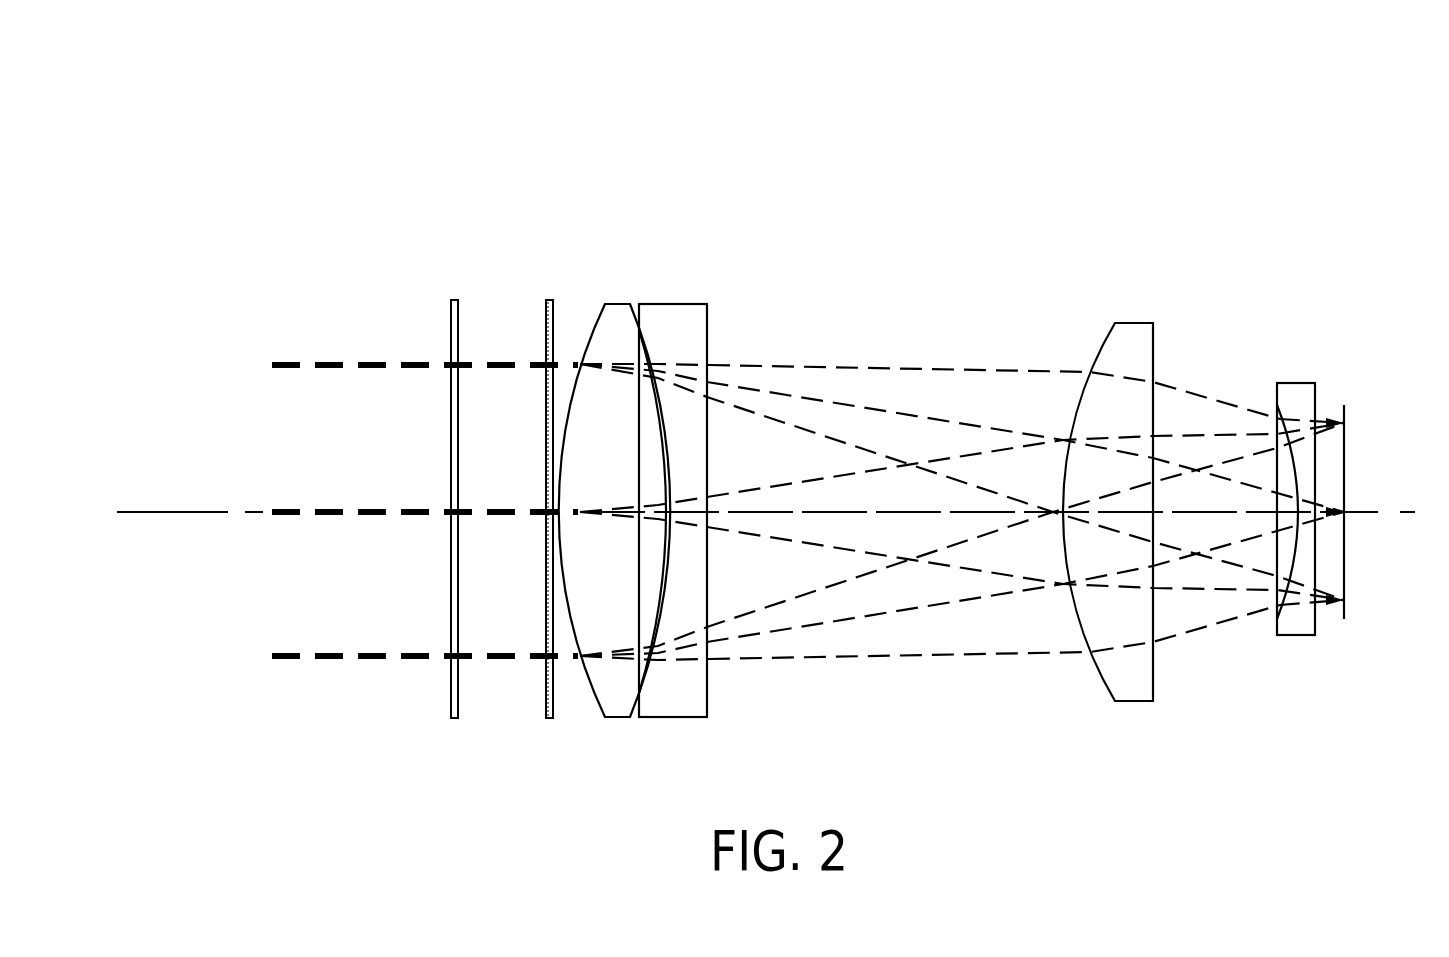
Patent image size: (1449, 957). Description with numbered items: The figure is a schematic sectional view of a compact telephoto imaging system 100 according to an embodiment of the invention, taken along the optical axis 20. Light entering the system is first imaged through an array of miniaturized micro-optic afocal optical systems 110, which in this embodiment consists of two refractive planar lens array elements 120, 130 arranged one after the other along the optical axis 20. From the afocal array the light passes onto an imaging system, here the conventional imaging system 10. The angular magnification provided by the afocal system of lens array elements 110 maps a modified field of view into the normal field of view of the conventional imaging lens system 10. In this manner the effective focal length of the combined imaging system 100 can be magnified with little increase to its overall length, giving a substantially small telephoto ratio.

The compact telephoto imaging system 100 is at (270, 130).
The optical axis 20 is at (150, 512).
The array of afocal optical systems 110 is at (573, 300).
The refractive planar lens array element 120 is at (452, 720).
The refractive planar lens array element 130 is at (549, 720).
The conventional imaging system 10 is at (1367, 300).